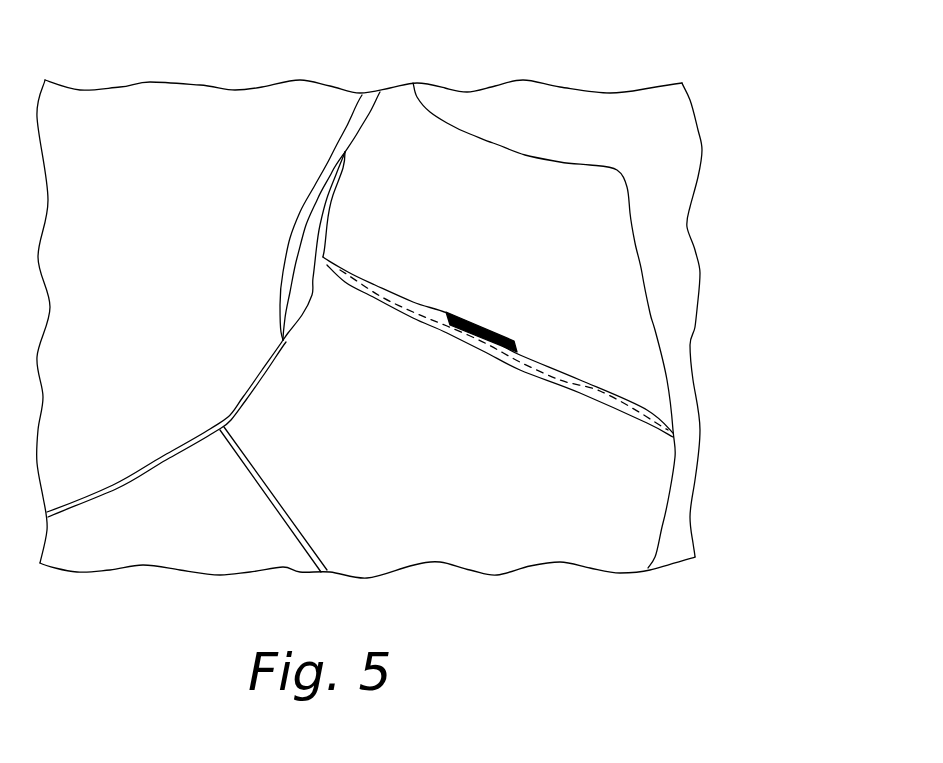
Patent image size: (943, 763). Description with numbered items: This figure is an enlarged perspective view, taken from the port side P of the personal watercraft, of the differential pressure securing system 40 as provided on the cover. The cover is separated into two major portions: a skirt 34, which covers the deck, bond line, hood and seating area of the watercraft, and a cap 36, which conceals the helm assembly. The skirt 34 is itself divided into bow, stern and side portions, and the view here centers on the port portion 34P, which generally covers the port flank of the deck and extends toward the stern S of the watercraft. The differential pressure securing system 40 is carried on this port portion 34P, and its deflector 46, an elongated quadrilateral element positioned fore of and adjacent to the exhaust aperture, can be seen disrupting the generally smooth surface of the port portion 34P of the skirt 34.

The cap 36 is at (177, 147).
The stern S is at (463, 143).
The deflector 46 is at (380, 290).
The port P is at (707, 256).
The skirt 34 is at (585, 342).
The port portion 34P is at (605, 475).
The differential pressure securing system 40 is at (400, 321).